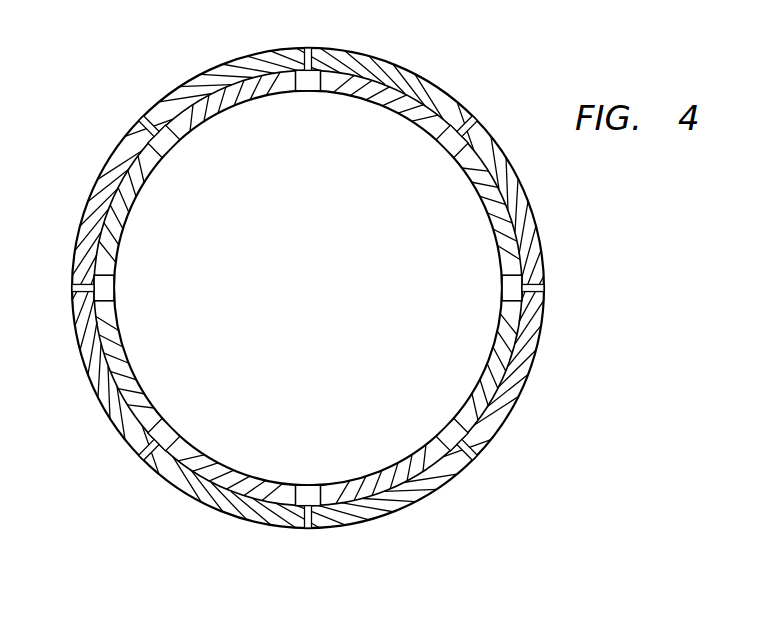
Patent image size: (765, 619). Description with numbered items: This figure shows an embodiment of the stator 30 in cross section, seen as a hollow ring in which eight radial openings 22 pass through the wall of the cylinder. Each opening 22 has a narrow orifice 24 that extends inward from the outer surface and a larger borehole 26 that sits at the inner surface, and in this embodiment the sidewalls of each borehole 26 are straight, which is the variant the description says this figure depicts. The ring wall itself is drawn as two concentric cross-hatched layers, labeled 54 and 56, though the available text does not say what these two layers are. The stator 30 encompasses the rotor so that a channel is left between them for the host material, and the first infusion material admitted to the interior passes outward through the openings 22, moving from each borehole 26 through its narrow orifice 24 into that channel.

The opening 22 is at (318, 99).
The narrow orifice 24 is at (308, 47).
The borehole 26 is at (305, 96).
The stator 30 is at (346, 289).
The outer layer 54 is at (200, 87).
The inner layer 56 is at (421, 99).